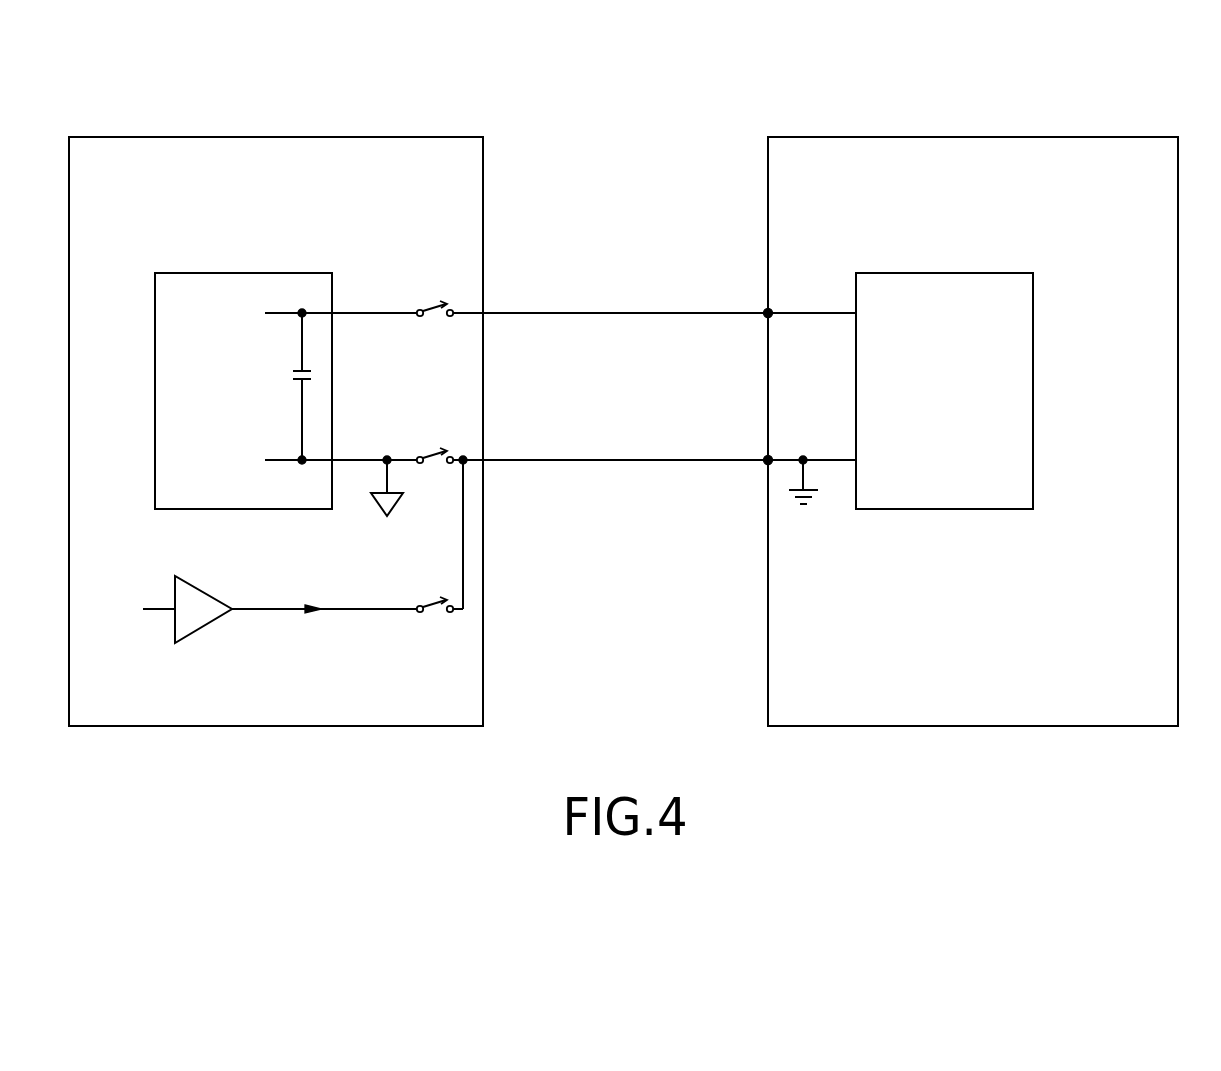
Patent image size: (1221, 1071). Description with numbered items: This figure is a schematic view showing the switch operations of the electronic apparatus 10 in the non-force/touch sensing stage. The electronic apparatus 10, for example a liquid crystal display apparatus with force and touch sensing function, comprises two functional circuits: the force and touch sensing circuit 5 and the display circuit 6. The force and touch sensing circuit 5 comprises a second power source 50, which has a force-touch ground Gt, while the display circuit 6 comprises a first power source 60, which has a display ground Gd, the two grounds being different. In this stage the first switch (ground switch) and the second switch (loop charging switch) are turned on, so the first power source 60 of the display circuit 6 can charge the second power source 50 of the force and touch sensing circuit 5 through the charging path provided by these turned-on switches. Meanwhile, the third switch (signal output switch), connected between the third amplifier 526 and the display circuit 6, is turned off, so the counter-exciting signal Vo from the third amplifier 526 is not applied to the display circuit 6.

The electronic apparatus 10 is at (611, 46).
The force and touch sensing circuit 5 is at (277, 142).
The display circuit 6 is at (975, 142).
The second power source 50 is at (242, 278).
The first power source 60 is at (945, 278).
The third amplifier 526 is at (195, 622).